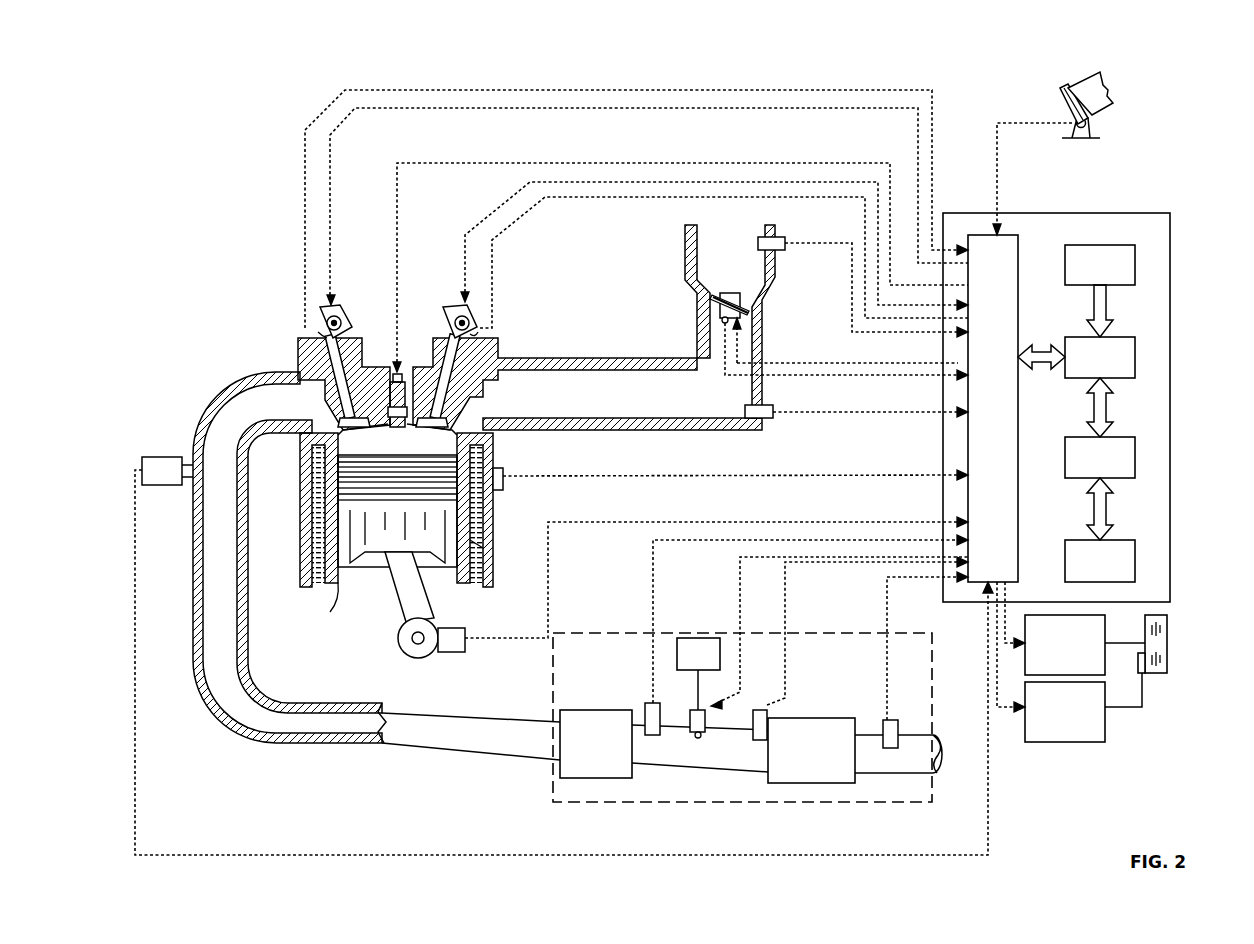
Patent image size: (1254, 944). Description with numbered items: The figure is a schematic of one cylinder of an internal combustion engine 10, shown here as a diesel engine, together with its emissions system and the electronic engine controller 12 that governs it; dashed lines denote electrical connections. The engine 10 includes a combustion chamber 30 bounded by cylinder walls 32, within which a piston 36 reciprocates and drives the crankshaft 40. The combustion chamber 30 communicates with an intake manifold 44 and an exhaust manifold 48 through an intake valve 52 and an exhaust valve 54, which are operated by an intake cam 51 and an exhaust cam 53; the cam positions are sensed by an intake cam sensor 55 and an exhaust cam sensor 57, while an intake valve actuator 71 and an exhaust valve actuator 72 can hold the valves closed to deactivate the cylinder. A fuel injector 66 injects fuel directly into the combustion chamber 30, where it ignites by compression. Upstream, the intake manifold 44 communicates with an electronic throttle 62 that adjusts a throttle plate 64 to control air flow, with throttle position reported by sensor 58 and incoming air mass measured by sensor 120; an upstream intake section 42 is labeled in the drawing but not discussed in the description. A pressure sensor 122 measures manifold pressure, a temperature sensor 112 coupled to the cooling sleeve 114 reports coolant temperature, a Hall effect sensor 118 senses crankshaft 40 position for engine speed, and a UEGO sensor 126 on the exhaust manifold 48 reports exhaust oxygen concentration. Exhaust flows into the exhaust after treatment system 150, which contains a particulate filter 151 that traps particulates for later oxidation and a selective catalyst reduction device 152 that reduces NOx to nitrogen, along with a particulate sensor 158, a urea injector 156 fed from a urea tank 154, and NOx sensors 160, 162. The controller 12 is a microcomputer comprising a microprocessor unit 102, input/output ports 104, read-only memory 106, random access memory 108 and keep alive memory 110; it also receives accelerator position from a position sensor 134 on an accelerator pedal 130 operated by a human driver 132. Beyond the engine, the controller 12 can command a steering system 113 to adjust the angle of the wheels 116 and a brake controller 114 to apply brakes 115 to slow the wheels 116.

The internal combustion engine 10 is at (230, 292).
The electronic engine controller 12 is at (1170, 213).
The combustion chamber 30 is at (373, 440).
The cylinder walls 32 is at (332, 604).
The piston 36 is at (382, 540).
The crankshaft 40 is at (407, 660).
The intake manifold 42 is at (730, 321).
The intake manifold 44 is at (587, 384).
The exhaust manifold 48 is at (376, 566).
The intake cam 51 is at (452, 322).
The intake valve 52 is at (457, 408).
The exhaust cam 53 is at (316, 326).
The exhaust valve 54 is at (330, 392).
The intake cam sensor 55 is at (480, 330).
The exhaust cam sensor 57 is at (314, 328).
The throttle position sensor 58 is at (720, 318).
The electronic throttle 62 is at (746, 302).
The throttle plate 64 is at (712, 298).
The fuel injector 66 is at (400, 378).
The intake valve actuator 71 is at (445, 328).
The exhaust valve actuator 72 is at (352, 326).
The microprocessor unit 102 is at (1135, 357).
The input/output ports 104 is at (1020, 245).
The read-only memory 106 is at (1135, 265).
The random access memory 108 is at (1135, 460).
The keep alive memory 110 is at (1135, 560).
The temperature sensor 112 is at (504, 478).
The steering system 113 is at (1075, 628).
The brake controller 114 is at (478, 548).
The brakes 115 is at (1145, 672).
The wheels 116 is at (1167, 648).
The Hall effect sensor 118 is at (447, 653).
The air mass sensor 120 is at (782, 242).
The pressure sensor 122 is at (772, 416).
The universal exhaust gas oxygen sensor 126 is at (142, 466).
The accelerator pedal 130 is at (1062, 102).
The human driver 132 is at (1108, 85).
The position sensor 134 is at (1095, 124).
The exhaust after treatment system 150 is at (864, 806).
The particulate filter 151 is at (596, 744).
The selective catalyst reduction device 152 is at (811, 750).
The urea tank 154 is at (698, 674).
The urea injector 156 is at (692, 712).
The particulate sensor 158 is at (652, 702).
The NOx sensor 160 is at (760, 708).
The NOx sensor 162 is at (897, 722).